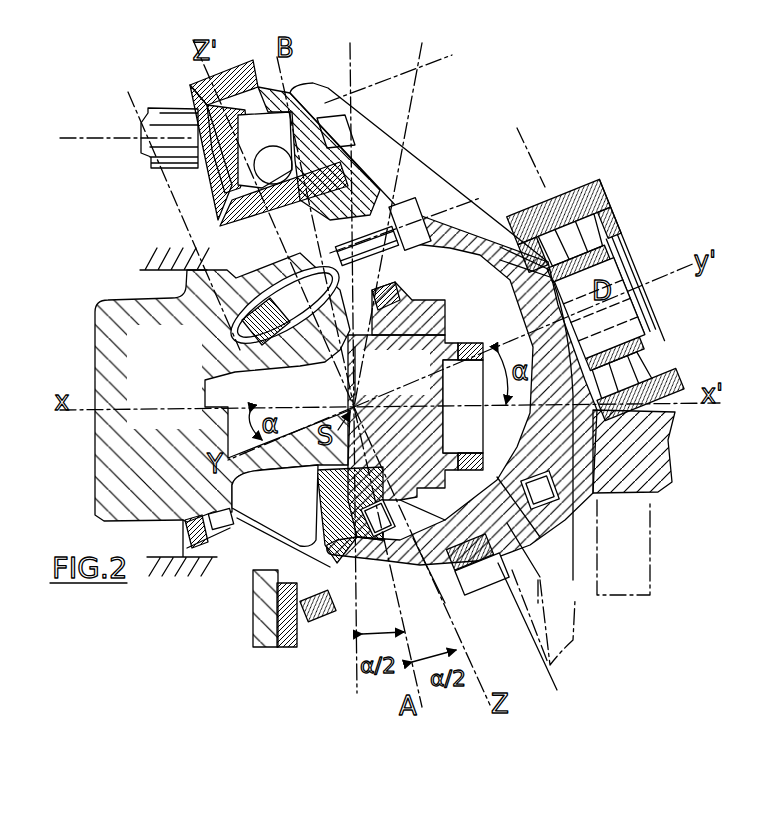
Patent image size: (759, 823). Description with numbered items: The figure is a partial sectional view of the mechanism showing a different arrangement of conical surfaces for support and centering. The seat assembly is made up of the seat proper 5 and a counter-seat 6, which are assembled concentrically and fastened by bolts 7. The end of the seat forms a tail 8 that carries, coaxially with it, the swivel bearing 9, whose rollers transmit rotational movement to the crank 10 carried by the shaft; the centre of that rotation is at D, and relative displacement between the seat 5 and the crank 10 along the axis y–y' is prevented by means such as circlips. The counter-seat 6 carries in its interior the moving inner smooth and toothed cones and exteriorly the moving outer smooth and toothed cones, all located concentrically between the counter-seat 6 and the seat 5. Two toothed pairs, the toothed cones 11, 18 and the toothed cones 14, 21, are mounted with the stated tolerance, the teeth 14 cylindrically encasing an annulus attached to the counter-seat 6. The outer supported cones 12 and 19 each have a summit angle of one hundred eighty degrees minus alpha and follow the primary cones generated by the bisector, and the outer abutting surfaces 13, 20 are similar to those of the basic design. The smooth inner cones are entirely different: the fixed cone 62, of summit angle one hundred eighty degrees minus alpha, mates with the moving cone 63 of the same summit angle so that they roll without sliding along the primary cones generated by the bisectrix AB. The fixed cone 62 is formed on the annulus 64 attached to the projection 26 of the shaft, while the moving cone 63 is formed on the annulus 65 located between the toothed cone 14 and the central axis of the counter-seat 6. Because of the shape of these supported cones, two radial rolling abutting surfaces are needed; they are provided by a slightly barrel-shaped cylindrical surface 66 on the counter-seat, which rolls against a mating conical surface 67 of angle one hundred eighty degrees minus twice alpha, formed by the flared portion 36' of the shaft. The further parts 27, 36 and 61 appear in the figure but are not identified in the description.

The seat proper 5 is at (532, 310).
The counter-seat 6 is at (292, 285).
The bolts 7 is at (418, 205).
The tail 8 is at (605, 265).
The swivel bearing 9 is at (580, 230).
The crank 10 is at (572, 197).
The toothed cone 11 is at (500, 563).
The outer supported cone 12 is at (408, 540).
The outer abutting surface 13 is at (445, 560).
The toothed cone 14 is at (245, 335).
The toothed cone 18 is at (312, 605).
The outer supported cone 19 is at (333, 576).
The outer abutting surface 20 is at (318, 612).
The toothed cone 21 is at (385, 310).
The projection of the shaft 26 is at (374, 392).
The bearing 27 is at (463, 406).
The bushing 36 is at (178, 579).
The flared portion of the shaft 36' is at (240, 608).
The bearing block 61 is at (462, 572).
The fixed cone 62 is at (413, 310).
The moving cone 63 is at (313, 345).
The annulus 64 is at (443, 322).
The annulus 65 is at (300, 313).
The cylindrical surface 66 is at (448, 522).
The conical surface 67 is at (320, 555).